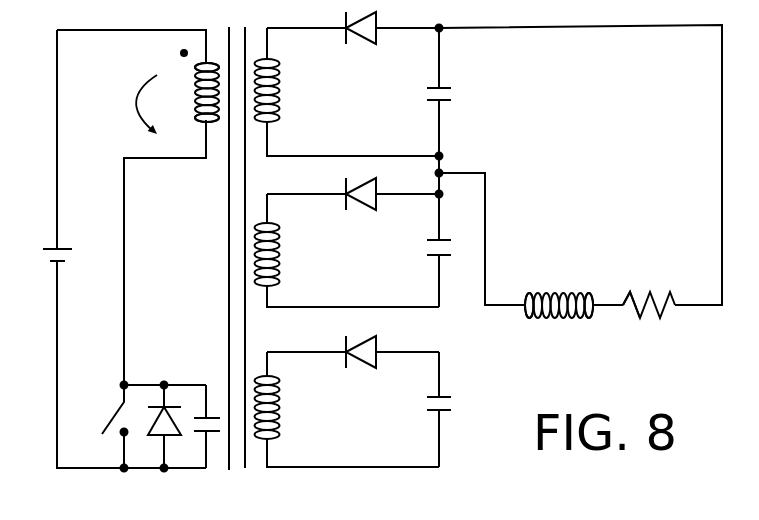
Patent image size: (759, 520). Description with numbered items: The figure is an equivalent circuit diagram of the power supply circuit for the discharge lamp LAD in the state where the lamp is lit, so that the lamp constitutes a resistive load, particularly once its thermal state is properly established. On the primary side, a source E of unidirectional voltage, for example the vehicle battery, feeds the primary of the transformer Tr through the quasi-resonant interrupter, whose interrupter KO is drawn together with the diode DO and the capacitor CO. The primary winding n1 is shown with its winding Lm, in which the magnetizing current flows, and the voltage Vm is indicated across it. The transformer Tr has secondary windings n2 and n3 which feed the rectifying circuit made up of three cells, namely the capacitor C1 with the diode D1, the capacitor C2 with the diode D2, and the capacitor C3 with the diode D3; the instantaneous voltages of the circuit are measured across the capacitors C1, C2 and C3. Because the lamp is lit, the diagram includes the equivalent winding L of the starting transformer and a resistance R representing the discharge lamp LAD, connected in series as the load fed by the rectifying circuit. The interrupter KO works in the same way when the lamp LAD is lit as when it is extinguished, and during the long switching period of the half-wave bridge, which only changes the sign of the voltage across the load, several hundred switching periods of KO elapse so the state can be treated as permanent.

The source of unidirectional voltage E is at (42, 257).
The interrupter KO is at (105, 427).
The diode DO is at (155, 427).
The capacitor CO is at (197, 426).
The primary winding n1 is at (193, 89).
The winding Lm is at (192, 103).
The magnetizing voltage Vm is at (130, 104).
The secondary winding n2 is at (282, 172).
The secondary winding n3 is at (284, 407).
The diode D1 is at (379, 37).
The capacitor C1 is at (424, 92).
The diode D2 is at (380, 205).
The capacitor C2 is at (422, 252).
The diode D3 is at (383, 360).
The capacitor C3 is at (423, 405).
The equivalent winding L is at (559, 288).
The resistance R is at (649, 288).
The transformer Tr is at (562, 341).
The discharge lamp LAD is at (673, 308).